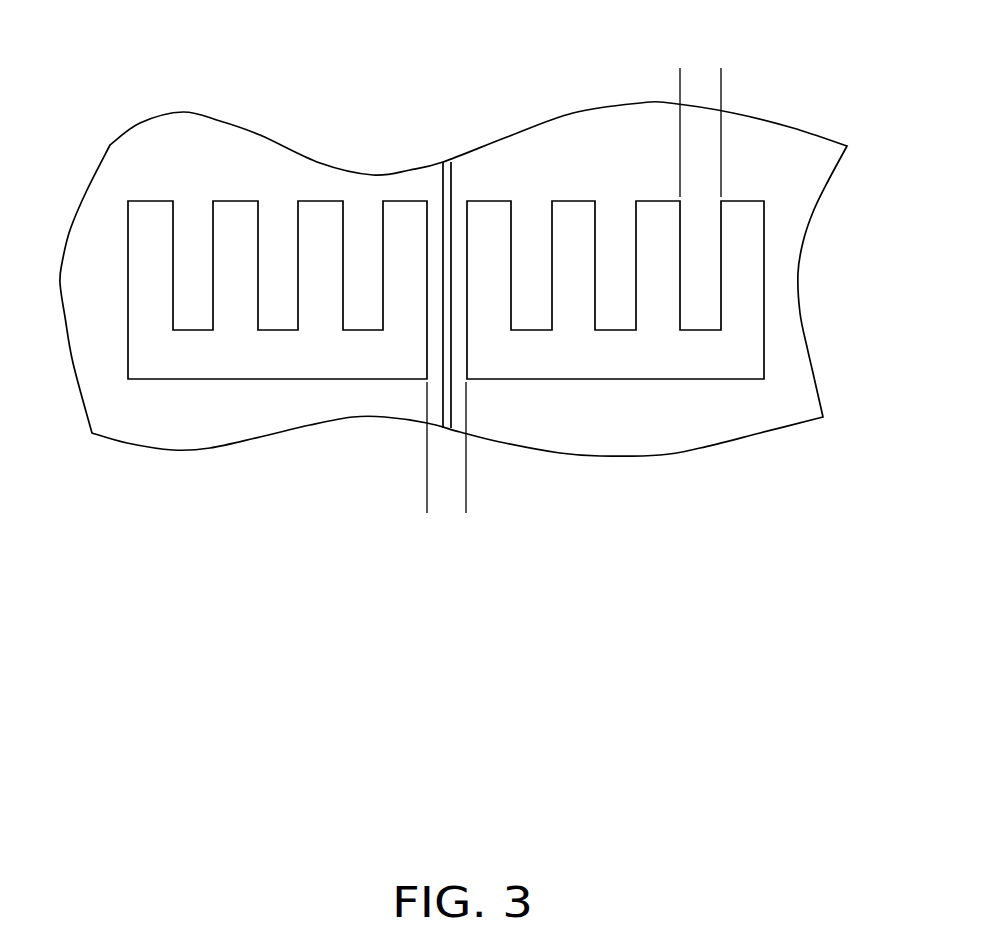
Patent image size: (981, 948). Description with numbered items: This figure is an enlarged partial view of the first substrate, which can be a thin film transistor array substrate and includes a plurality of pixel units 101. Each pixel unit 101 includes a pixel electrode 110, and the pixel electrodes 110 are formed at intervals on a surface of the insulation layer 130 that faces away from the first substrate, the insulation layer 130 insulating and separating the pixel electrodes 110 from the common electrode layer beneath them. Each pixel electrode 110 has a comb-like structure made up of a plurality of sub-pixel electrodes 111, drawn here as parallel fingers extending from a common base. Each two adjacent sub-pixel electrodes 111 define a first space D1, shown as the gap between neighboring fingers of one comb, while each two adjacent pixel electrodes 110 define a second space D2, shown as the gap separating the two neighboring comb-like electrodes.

The pixel unit 101 is at (228, 152).
The pixel electrode 110 is at (500, 335).
The sub-pixel electrode 111 is at (733, 310).
The insulation layer 130 is at (747, 405).
The first space D1 is at (763, 77).
The second space D2 is at (515, 505).